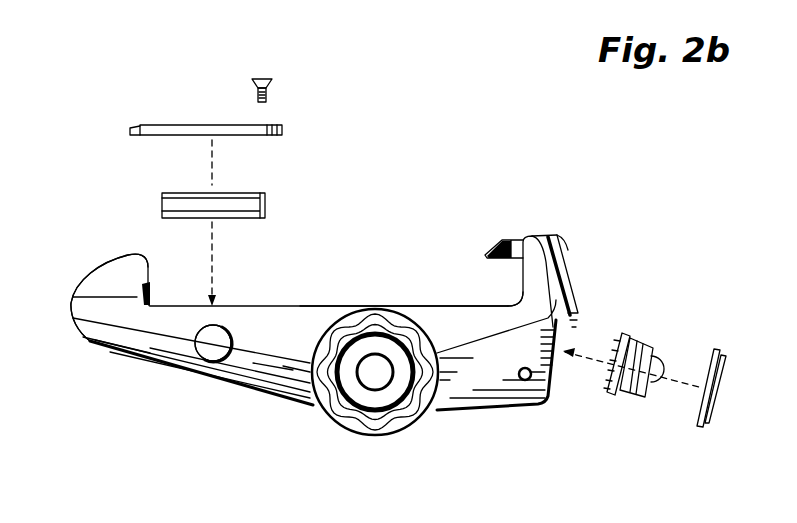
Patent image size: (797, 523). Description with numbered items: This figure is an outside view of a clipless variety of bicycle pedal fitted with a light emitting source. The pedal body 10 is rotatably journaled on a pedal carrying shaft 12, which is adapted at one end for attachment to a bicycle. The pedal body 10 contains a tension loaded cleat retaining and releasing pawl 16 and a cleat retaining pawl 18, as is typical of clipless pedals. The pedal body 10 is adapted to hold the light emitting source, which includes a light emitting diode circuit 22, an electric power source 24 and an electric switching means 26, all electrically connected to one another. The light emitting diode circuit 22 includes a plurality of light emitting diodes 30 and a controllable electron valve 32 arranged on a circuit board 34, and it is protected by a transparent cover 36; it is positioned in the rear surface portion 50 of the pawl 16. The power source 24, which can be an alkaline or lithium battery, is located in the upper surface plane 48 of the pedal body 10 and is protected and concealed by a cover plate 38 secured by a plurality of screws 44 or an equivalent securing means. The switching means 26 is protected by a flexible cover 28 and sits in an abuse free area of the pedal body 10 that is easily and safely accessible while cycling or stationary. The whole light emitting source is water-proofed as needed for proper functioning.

The pedal body 10 is at (261, 328).
The pedal carrying shaft 12 is at (367, 397).
The tension loaded cleat retaining and releasing pawl 16 is at (520, 250).
The cleat retaining pawl 18 is at (130, 272).
The light emitting diode circuit 22 is at (612, 379).
The electric power source 24 is at (223, 205).
The electric switching means 26 is at (213, 343).
The flexible cover 28 is at (215, 348).
The light emitting diodes 30 is at (656, 382).
The controllable electron valve 32 is at (637, 393).
The circuit board 34 is at (622, 390).
The transparent cover 36 is at (727, 347).
The cover plate 38 is at (200, 125).
The screws 44 is at (262, 78).
The upper surface plane 48 is at (407, 303).
The rear surface portion 50 is at (577, 278).